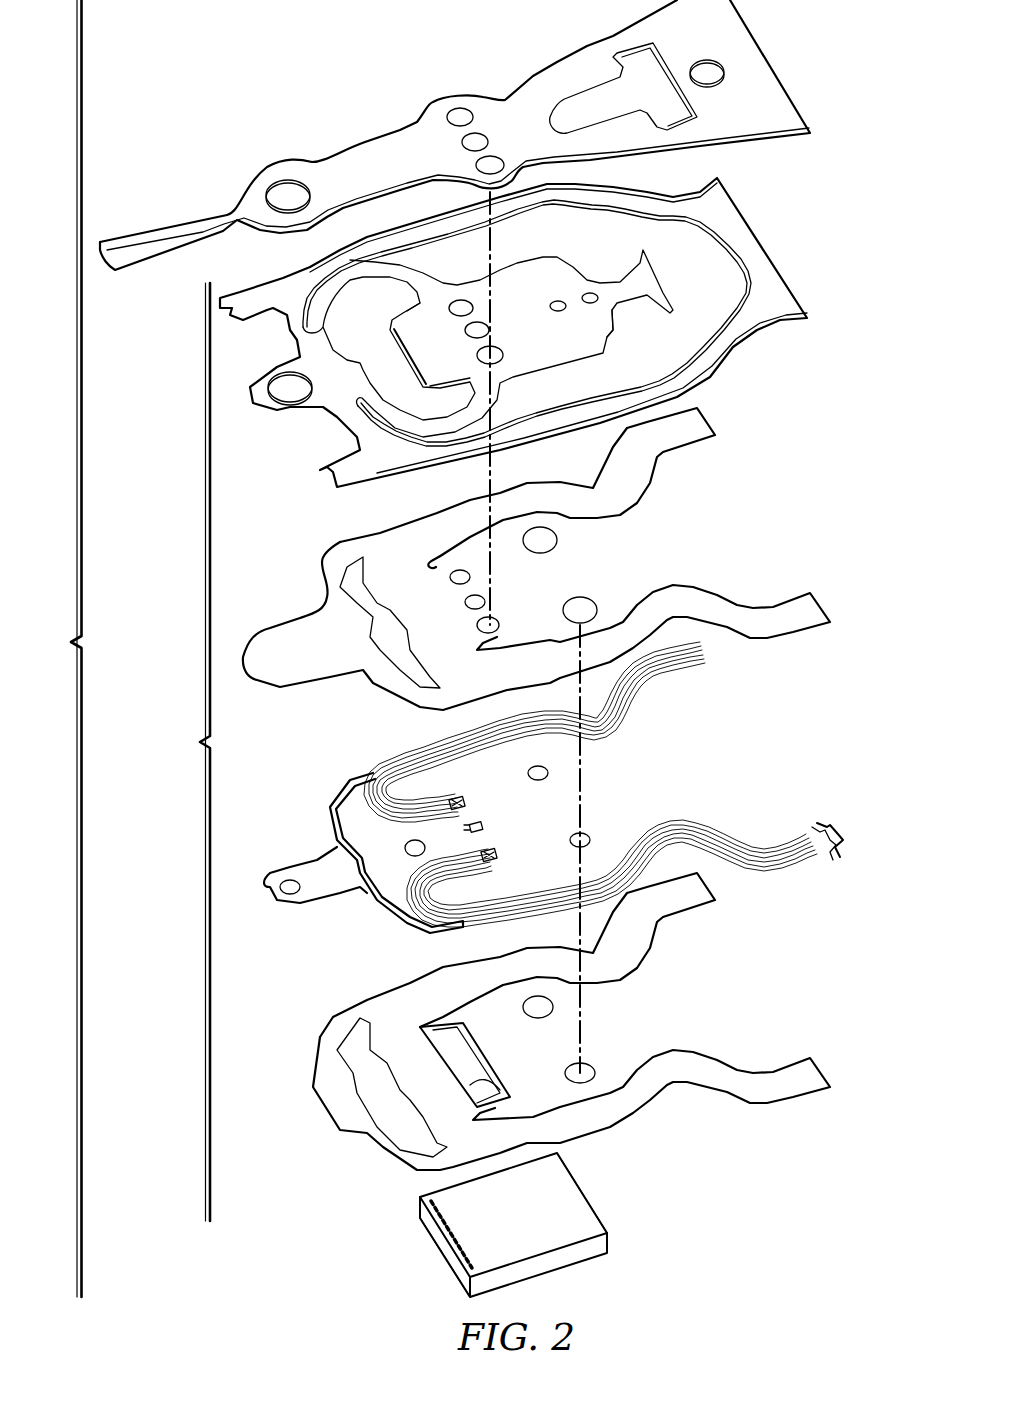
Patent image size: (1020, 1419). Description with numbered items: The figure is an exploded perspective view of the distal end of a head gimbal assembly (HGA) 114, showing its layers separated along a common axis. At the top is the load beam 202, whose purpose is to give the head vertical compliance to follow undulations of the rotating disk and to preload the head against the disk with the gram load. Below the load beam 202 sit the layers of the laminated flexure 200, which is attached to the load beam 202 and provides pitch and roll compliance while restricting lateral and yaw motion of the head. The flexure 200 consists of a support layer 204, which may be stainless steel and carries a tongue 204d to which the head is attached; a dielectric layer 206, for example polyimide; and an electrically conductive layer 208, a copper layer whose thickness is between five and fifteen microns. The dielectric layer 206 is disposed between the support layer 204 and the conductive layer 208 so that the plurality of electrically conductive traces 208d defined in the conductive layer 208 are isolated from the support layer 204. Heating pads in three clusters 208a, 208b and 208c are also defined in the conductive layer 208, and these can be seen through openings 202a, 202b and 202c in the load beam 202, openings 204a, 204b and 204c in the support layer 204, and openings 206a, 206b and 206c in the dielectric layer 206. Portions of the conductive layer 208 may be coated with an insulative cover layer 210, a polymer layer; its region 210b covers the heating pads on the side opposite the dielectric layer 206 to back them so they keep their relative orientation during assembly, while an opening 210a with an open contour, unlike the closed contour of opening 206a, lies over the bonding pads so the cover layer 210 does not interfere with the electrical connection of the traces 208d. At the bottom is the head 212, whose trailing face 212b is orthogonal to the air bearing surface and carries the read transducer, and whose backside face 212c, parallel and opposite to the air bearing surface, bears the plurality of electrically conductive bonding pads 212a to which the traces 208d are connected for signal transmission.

The head gimbal assembly (HGA) 114 is at (53, 648).
The laminated flexure 200 is at (181, 752).
The load beam 202 is at (460, 135).
The opening in load beam 202a is at (490, 165).
The opening in load beam 202b is at (473, 145).
The opening in load beam 202c is at (460, 117).
The support layer 204 is at (522, 332).
The opening in support layer 204a is at (493, 357).
The opening in support layer 204b is at (477, 330).
The opening in support layer 204c is at (463, 307).
The tongue 204d is at (613, 337).
The dielectric layer 206 is at (536, 559).
The opening in dielectric layer 206a is at (490, 625).
The opening in dielectric layer 206b is at (475, 602).
The opening in dielectric layer 206c is at (460, 577).
The electrically conductive layer 208 is at (584, 787).
The heating pad cluster 208a is at (490, 853).
The heating pad cluster 208b is at (483, 827).
The heating pad cluster 208c is at (460, 800).
The electrically conductive traces 208d is at (858, 839).
The insulative cover layer 210 is at (584, 1021).
The opening in cover layer 210a is at (467, 1097).
The region of cover layer 210b is at (450, 1040).
The head 212 is at (533, 1225).
The electrically conductive bonding pads 212a is at (467, 1252).
The trailing face 212b is at (447, 1247).
The backside face 212c is at (597, 1225).